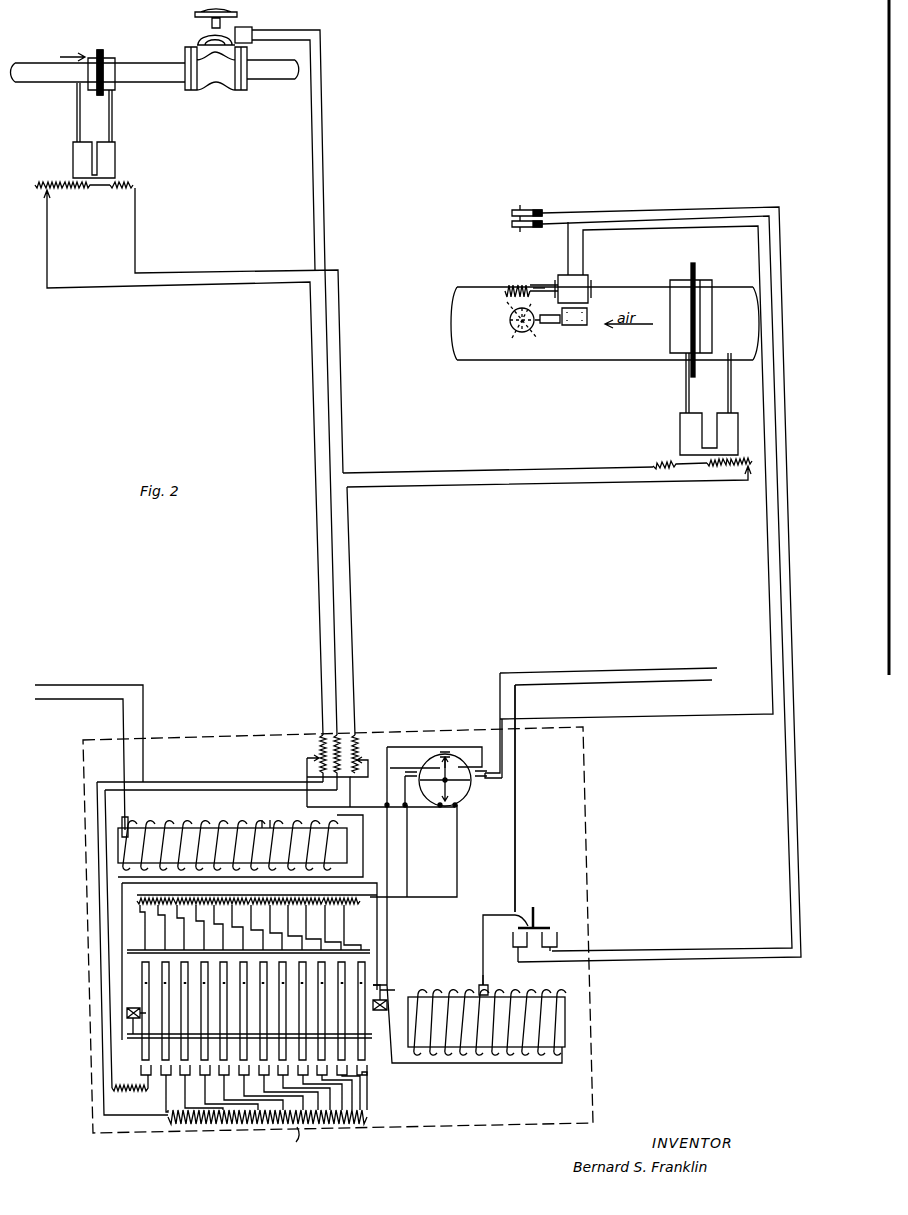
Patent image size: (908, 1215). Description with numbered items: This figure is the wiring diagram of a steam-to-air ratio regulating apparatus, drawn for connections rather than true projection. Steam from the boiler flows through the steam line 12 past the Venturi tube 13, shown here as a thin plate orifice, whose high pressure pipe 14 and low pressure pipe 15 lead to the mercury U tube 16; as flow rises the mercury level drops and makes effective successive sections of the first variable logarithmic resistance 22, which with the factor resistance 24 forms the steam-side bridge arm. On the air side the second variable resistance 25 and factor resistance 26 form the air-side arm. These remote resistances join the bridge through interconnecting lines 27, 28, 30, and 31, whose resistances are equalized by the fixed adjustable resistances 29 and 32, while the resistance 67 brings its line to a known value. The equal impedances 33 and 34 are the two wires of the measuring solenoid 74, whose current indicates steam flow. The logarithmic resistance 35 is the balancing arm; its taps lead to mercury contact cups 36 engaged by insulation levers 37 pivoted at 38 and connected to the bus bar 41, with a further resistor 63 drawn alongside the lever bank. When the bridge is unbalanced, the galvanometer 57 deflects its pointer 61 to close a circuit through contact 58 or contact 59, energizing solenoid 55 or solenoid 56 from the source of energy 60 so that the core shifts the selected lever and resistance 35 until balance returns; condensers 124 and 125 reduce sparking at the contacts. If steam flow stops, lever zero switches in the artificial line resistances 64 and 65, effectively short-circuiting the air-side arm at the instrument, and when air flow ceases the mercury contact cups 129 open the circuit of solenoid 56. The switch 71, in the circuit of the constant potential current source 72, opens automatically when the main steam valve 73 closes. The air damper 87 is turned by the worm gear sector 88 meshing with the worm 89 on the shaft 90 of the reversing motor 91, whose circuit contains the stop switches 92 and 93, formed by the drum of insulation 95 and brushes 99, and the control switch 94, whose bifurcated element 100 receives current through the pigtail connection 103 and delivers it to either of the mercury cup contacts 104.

The steam line 12 is at (52, 85).
The Venturi tube 13 is at (99, 50).
The high pressure pipe 14 is at (77, 116).
The low pressure pipe 15 is at (112, 116).
The mercury U tube 16 is at (115, 155).
The first variable logarithmic resistance 22 is at (84, 190).
The factor resistance 24 is at (126, 190).
The second variable resistance 25 is at (730, 474).
The factor resistance 26 is at (675, 457).
The interconnecting line 27 is at (223, 270).
The interconnecting line 28 is at (238, 288).
The fixed adjustable resistance 29 is at (320, 752).
The interconnecting line 30 is at (437, 469).
The interconnecting line 31 is at (410, 487).
The fixed adjustable resistance 32 is at (357, 748).
The impedance 33 is at (268, 812).
The impedance 34 is at (270, 812).
The logarithmic resistance R1 35 is at (258, 1127).
The mercury contact cups 36 is at (369, 1072).
The insulation levers 37 is at (140, 1054).
The pivot 38 is at (140, 1008).
The bus bar 41 is at (137, 1030).
The solenoid 55 is at (464, 987).
The solenoid 56 is at (545, 987).
The galvanometer 57 is at (470, 793).
The contact 58 is at (415, 780).
The contact 59 is at (452, 753).
The source of energy 60 is at (610, 789).
The galvanometer pointer 61 is at (444, 785).
The resistor 63 is at (198, 910).
The artificial line resistance 64 is at (128, 1092).
The artificial line resistance 65 is at (134, 1092).
The resistance 67 is at (327, 790).
The switch 71 is at (245, 27).
The constant potential current source 72 is at (89, 757).
The main steam valve 73 is at (222, 92).
The measuring solenoid 74 is at (232, 812).
The damper 87 is at (545, 338).
The worm gear sector 88 is at (325, 244).
The worm 89 is at (533, 287).
The shaft 90 is at (557, 269).
The reversing motor 91 is at (590, 277).
The stop switch 92 is at (512, 212).
The stop switch 93 is at (512, 226).
The control switch 94 is at (534, 956).
The drum of insulation 95 is at (513, 325).
The brushes 99 is at (552, 196).
The bifurcated element 100 is at (533, 914).
The pigtail connection 103 is at (520, 922).
The mercury cup contacts 104 is at (514, 942).
The condenser 124 is at (408, 808).
The condenser 125 is at (510, 778).
The mercury contact cups 129 is at (397, 994).